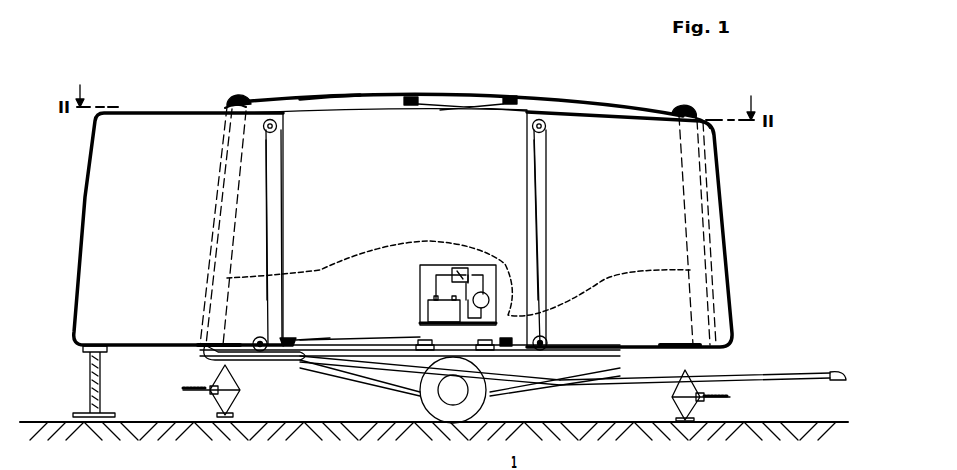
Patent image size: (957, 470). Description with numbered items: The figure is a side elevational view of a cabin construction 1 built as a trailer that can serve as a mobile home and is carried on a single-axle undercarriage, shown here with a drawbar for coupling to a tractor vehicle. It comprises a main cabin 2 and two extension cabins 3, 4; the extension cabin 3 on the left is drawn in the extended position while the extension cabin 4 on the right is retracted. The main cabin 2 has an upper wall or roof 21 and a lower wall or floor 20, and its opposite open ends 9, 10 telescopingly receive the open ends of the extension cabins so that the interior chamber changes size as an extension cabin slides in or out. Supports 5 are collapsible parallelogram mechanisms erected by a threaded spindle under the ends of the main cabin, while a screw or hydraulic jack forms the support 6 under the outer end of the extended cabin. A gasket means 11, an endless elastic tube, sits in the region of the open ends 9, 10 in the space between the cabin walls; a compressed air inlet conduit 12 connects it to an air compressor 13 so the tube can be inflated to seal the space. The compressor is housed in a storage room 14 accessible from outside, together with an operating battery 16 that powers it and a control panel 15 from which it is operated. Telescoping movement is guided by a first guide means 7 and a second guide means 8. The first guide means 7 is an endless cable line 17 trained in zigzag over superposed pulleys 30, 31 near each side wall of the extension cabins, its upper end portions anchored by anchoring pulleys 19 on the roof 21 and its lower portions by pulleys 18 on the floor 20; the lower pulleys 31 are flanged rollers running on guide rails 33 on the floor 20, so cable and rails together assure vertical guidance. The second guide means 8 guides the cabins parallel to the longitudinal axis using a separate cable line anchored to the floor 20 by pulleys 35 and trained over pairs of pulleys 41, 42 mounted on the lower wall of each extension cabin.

The cabin construction 1 is at (504, 40).
The main cabin 2 is at (495, 95).
The extension cabin 3 is at (84, 197).
The extension cabin 4 is at (725, 214).
The support 5 is at (236, 395).
The support 6 is at (101, 394).
The first guide means 7 is at (268, 222).
The second guide means 8 is at (343, 336).
The open end 9 is at (221, 99).
The open end 10 is at (714, 122).
The gasket means 11 is at (246, 101).
The compressed air inlet conduit 12 is at (352, 262).
The air compressor 13 is at (488, 292).
The storage room 14 is at (418, 284).
The control panel 15 is at (458, 268).
The operating battery 16 is at (430, 317).
The endless cable line 17 is at (268, 186).
The anchoring pulley 18 is at (222, 345).
The anchoring pulley 19 is at (408, 97).
The lower wall 20 is at (360, 372).
The upper wall 21 is at (326, 97).
The upper pulley 30 is at (277, 130).
The lower pulley 31 is at (258, 336).
The guide rail 33 is at (322, 362).
The anchoring pulley 35 is at (478, 340).
The pulley 41 is at (288, 337).
The pulley 42 is at (302, 340).